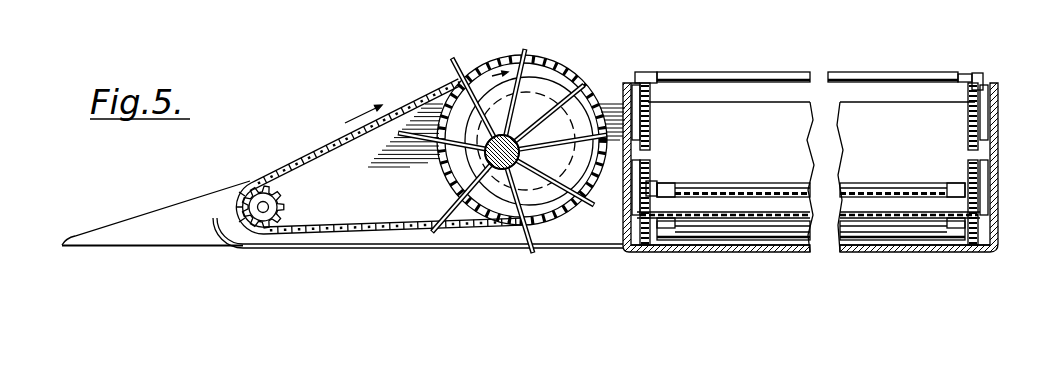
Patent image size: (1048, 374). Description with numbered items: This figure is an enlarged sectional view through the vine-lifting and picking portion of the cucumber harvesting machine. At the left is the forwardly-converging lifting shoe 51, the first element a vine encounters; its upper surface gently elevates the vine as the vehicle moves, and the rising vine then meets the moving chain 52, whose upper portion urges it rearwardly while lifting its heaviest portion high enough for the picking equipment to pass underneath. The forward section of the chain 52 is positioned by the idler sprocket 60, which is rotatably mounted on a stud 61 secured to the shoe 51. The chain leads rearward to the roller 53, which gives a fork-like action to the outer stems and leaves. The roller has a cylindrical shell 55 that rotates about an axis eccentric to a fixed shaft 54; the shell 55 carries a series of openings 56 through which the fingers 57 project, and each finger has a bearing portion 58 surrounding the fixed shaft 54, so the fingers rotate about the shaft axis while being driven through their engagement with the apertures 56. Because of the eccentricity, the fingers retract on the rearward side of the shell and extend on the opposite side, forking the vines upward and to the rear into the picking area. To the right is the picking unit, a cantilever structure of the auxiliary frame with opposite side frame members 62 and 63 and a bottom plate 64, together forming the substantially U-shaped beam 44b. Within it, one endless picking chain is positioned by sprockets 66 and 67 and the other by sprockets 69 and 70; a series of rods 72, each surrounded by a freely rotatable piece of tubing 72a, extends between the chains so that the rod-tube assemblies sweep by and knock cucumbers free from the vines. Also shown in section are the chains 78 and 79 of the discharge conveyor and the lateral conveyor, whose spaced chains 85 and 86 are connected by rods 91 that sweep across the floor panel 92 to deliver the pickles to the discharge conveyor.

The U-shaped beam 44b is at (760, 259).
The forwardly-converging shoe 51 is at (171, 207).
The chain 52 is at (330, 142).
The roller 53 is at (502, 51).
The fixed shaft 54 is at (486, 150).
The cylindrical shell 55 is at (550, 60).
The openings 56 is at (535, 57).
The fingers 57 is at (523, 100).
The bearing portion 58 is at (520, 143).
The idler sprocket 60 is at (286, 190).
The stud 61 is at (268, 208).
The side frame member 62 is at (997, 168).
The side frame member 63 is at (641, 158).
The bottom plate 64 is at (890, 253).
The sprocket 66 is at (653, 137).
The sprocket 67 is at (645, 176).
The sprocket 69 is at (980, 140).
The sprocket 70 is at (966, 168).
The rods 72 is at (970, 73).
The tubing 72a is at (847, 72).
The chain 78 is at (681, 10).
The chain 79 is at (457, 6).
The chain 85 is at (952, 220).
The chain 86 is at (663, 222).
The rods 91 is at (863, 183).
The floor panel 92 is at (753, 197).